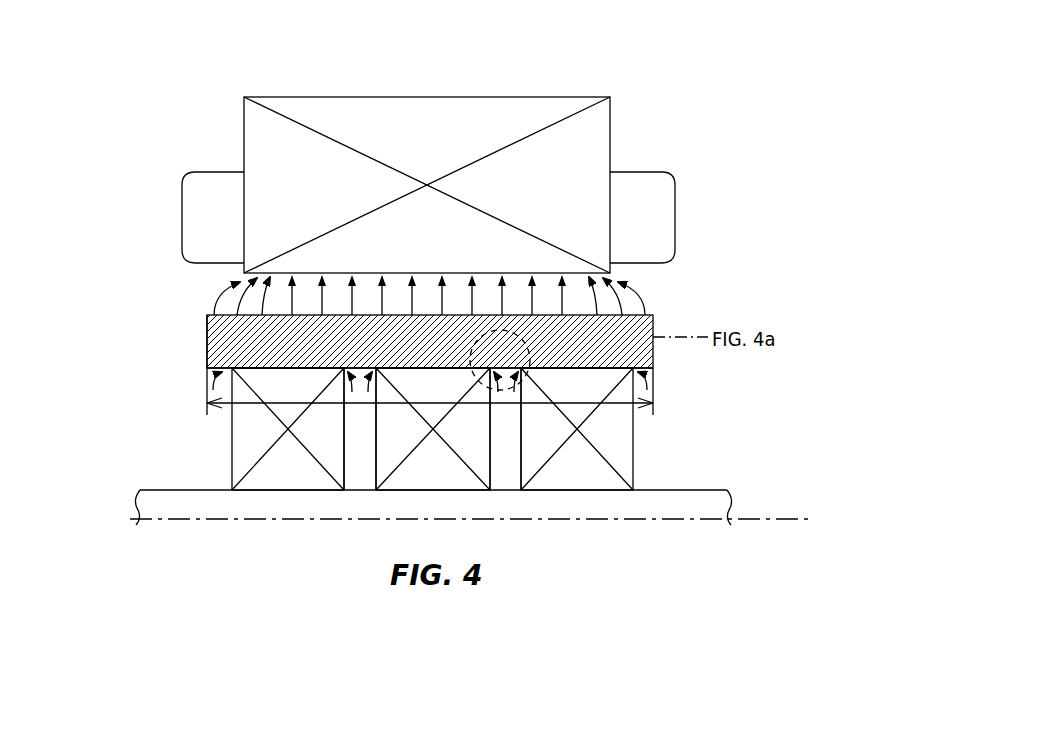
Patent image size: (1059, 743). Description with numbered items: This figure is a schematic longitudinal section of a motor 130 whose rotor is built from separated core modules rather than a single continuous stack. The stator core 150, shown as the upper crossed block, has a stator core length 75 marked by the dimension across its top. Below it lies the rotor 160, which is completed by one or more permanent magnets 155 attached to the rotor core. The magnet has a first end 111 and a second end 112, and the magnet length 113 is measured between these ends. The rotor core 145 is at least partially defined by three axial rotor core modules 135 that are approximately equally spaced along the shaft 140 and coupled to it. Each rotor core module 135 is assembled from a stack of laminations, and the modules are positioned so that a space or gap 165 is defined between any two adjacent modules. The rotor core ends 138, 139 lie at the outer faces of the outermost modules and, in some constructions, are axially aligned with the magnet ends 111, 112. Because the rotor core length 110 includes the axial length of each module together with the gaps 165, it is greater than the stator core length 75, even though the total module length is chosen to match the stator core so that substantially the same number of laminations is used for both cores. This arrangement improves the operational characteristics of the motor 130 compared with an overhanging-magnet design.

The stator core length 75 is at (244, 68).
The motor 130 is at (645, 68).
The stator core 150 is at (590, 160).
The permanent magnet 155 is at (653, 315).
The first end of magnet 111 is at (207, 332).
The second end of magnet 112 is at (653, 348).
The rotor core 145 is at (147, 367).
The rotor 160 is at (805, 310).
The rotor core module 135 is at (235, 437).
The gap 165 is at (357, 437).
The magnet length 113 is at (262, 452).
The rotor core end 138 is at (283, 405).
The rotor core end 139 is at (633, 466).
The shaft 140 is at (707, 492).
The rotor core length 110 is at (235, 498).